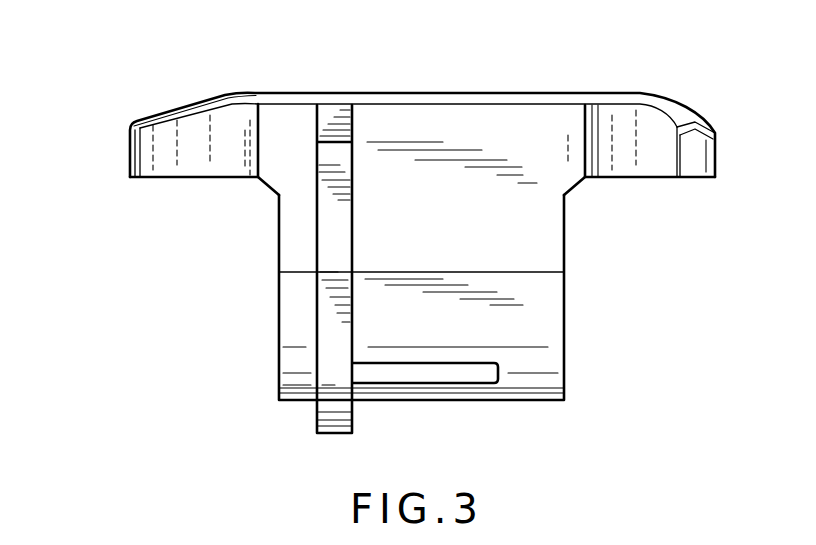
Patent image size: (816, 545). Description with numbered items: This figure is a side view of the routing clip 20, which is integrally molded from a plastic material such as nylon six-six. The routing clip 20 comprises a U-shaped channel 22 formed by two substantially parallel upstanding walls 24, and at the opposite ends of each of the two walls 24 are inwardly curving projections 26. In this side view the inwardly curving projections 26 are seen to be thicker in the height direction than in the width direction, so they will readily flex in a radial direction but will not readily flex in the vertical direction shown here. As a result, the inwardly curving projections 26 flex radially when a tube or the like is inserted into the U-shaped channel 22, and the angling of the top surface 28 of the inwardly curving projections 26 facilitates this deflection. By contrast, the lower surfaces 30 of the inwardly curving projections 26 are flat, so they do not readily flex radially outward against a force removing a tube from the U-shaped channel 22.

The routing clip 20 is at (155, 308).
The U-shaped channel 22 is at (565, 353).
The upstanding walls 24 is at (548, 235).
The inwardly curving projections 26 is at (143, 152).
The top surface 28 is at (193, 100).
The lower surfaces 30 is at (184, 177).